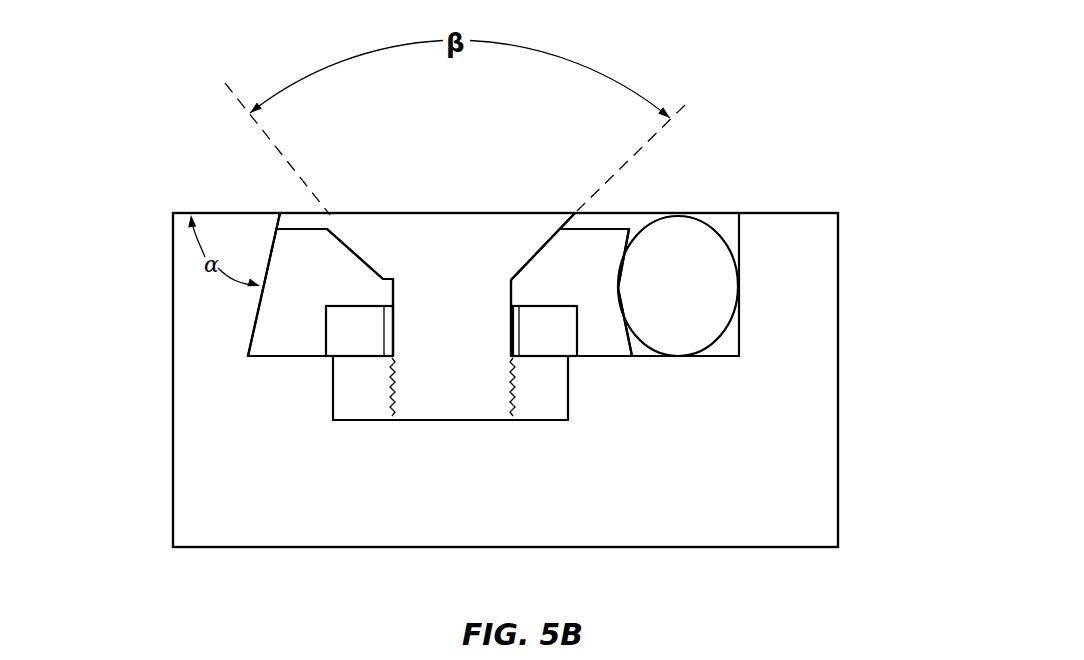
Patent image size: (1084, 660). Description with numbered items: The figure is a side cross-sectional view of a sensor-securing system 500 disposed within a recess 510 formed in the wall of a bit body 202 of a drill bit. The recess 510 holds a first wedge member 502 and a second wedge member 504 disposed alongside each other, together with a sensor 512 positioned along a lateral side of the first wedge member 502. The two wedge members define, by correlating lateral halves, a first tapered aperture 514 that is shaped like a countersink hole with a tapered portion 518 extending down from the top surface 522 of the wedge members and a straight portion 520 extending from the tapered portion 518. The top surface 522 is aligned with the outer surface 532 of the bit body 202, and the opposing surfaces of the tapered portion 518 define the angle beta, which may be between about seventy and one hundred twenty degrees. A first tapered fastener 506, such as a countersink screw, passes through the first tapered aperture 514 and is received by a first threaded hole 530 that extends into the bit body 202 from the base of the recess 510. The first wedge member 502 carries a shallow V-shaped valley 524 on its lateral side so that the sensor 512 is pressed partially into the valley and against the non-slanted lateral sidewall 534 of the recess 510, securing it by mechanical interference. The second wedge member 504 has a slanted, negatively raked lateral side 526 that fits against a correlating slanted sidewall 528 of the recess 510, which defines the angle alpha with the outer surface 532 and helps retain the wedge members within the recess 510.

The sensor-securing system 500 is at (200, 134).
The bit body 202 is at (772, 345).
The outer surface 532 is at (182, 213).
The second wedge member 504 is at (298, 311).
The recess 510 is at (281, 213).
The top surface 522 is at (312, 229).
The first tapered aperture 514 is at (368, 242).
The slanted lateral side 526 is at (280, 332).
The slanted sidewall 528 is at (248, 356).
The first threaded hole 530 is at (390, 381).
The first tapered fastener 506 is at (527, 227).
The first wedge member 502 is at (578, 238).
The tapered portion 518 is at (525, 258).
The straight portion 520 is at (493, 328).
The shallow V-shaped valley 524 is at (618, 288).
The non-slanted lateral sidewall 534 is at (741, 270).
The sensor 512 is at (678, 243).